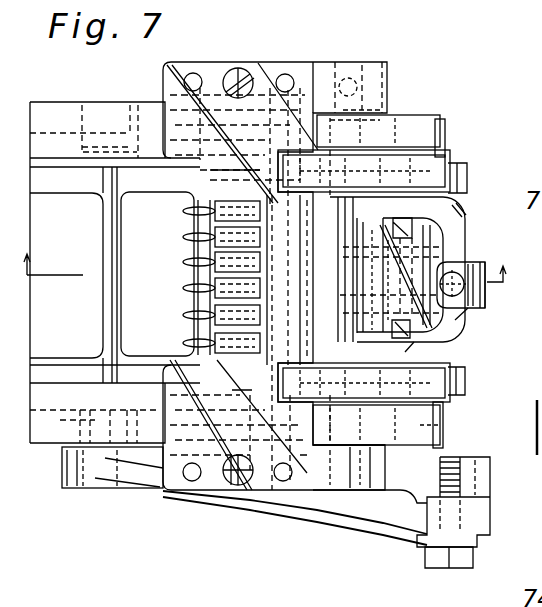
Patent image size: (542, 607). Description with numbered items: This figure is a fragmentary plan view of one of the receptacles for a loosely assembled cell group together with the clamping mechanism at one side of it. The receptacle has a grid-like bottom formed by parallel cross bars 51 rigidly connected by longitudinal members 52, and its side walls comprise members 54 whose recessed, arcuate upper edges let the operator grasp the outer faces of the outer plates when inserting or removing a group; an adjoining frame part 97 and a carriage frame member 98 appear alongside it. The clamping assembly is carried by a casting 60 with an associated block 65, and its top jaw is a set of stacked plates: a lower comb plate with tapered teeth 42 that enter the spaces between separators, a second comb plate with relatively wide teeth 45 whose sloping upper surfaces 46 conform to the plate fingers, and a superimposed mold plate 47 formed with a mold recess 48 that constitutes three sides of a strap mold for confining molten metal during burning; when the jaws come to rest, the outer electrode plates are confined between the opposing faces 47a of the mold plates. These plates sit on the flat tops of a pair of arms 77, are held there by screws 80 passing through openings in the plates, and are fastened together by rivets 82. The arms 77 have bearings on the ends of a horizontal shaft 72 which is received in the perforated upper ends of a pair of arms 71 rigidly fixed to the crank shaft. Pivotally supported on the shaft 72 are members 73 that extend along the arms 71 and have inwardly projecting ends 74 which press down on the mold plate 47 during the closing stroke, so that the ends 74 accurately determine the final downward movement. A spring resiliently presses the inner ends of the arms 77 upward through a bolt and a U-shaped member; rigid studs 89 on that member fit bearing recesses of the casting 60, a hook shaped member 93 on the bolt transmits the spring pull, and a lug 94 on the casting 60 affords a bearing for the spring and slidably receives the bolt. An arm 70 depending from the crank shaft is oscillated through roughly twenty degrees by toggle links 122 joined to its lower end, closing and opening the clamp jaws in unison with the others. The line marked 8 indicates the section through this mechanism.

The mold plate 47 is at (172, 87).
The opposing faces of the mold plates 47a is at (195, 357).
The tapered teeth 42 is at (187, 234).
The wide teeth 45 is at (197, 258).
The upper surfaces of the teeth 46 is at (230, 285).
The mold recess 48 is at (205, 308).
The cross bars 51 is at (104, 322).
The longitudinal members 52 is at (67, 372).
The side wall members 54 is at (78, 152).
The upper flange 97 is at (60, 108).
The carriage frame member 98 is at (50, 440).
The casting 60 is at (427, 317).
The piston 65 is at (387, 280).
The shaft 72 is at (370, 269).
The arm 70 is at (475, 460).
The arms 71 is at (443, 132).
The members 73 is at (450, 163).
The inwardly projecting ends 74 is at (233, 282).
The arms 77 is at (390, 72).
The screws 80 is at (228, 50).
The rivets 82 is at (190, 76).
The rigid studs 89 is at (402, 228).
The hook shaped member 93 is at (487, 295).
The lug 94 is at (470, 259).
The toggle links 122 is at (368, 525).
The section line 8- 8 is at (269, 258).